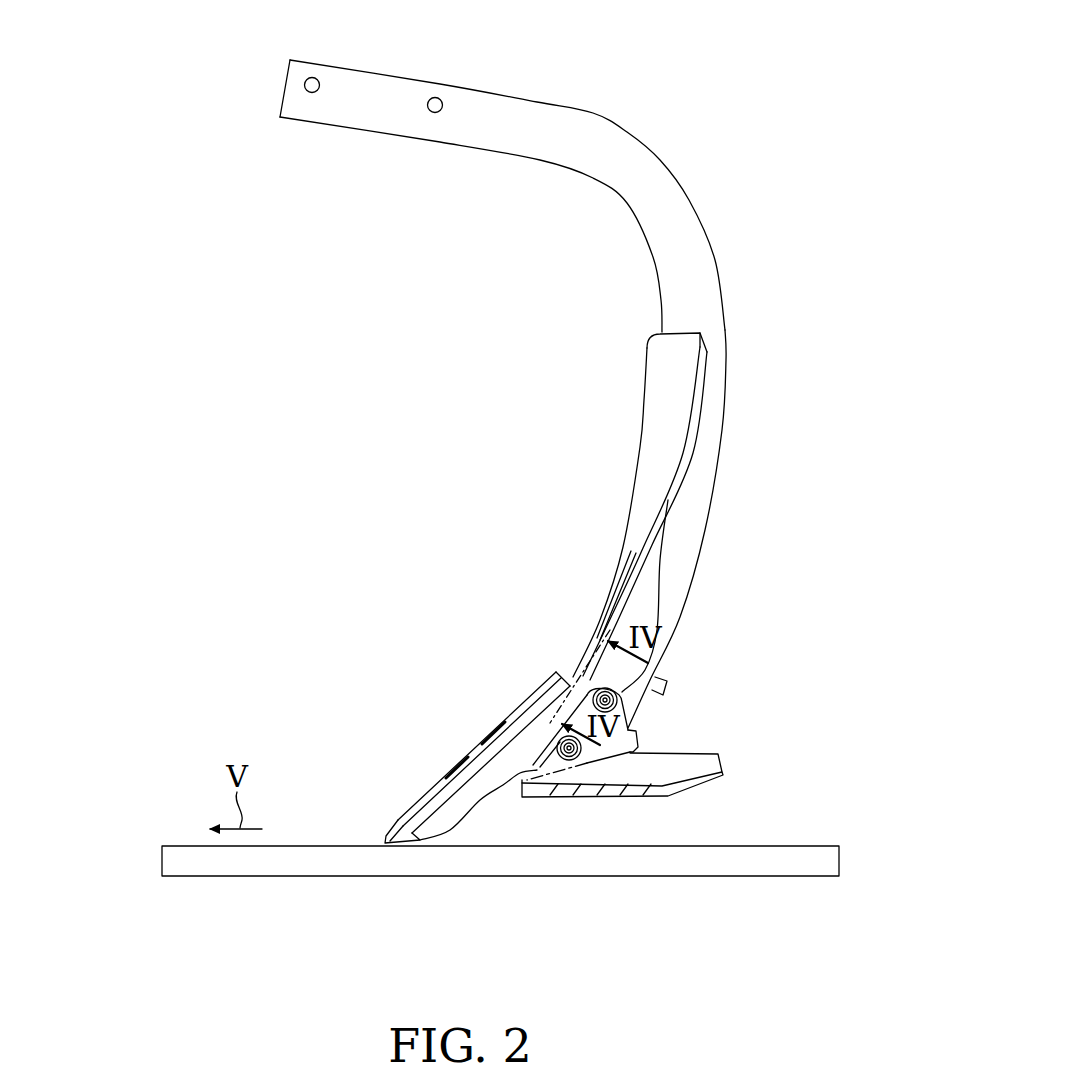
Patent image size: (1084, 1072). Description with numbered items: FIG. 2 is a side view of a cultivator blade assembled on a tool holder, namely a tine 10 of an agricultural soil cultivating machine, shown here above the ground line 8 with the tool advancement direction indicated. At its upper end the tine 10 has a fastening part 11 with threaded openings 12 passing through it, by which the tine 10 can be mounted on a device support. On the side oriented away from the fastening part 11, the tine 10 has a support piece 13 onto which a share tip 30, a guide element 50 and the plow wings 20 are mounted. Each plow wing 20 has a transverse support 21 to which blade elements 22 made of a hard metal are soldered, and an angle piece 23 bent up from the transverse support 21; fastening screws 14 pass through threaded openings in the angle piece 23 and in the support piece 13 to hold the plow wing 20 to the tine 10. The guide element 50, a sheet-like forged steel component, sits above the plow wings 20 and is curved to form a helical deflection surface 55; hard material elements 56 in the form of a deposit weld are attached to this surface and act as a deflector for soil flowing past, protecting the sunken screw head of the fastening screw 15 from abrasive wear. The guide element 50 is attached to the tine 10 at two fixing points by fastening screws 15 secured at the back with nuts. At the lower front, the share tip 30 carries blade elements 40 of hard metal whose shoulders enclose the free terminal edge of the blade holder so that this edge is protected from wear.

The ground surface 8 is at (430, 872).
The tine 10 is at (735, 156).
The fastening part 11 is at (387, 98).
The threaded openings 12 is at (311, 79).
The support piece 13 is at (675, 598).
The fastening screws 14 is at (590, 688).
The fastening screw 15 is at (667, 682).
The plow wings 20 is at (700, 763).
The transverse support 21 is at (642, 768).
The blade elements 22 is at (585, 794).
The angle piece 23 is at (553, 762).
The share tip 30 is at (437, 784).
The blade elements 40 is at (381, 843).
The guide element 50 is at (636, 448).
The helical deflection surface 55 is at (658, 370).
The hard material elements 56 is at (620, 558).